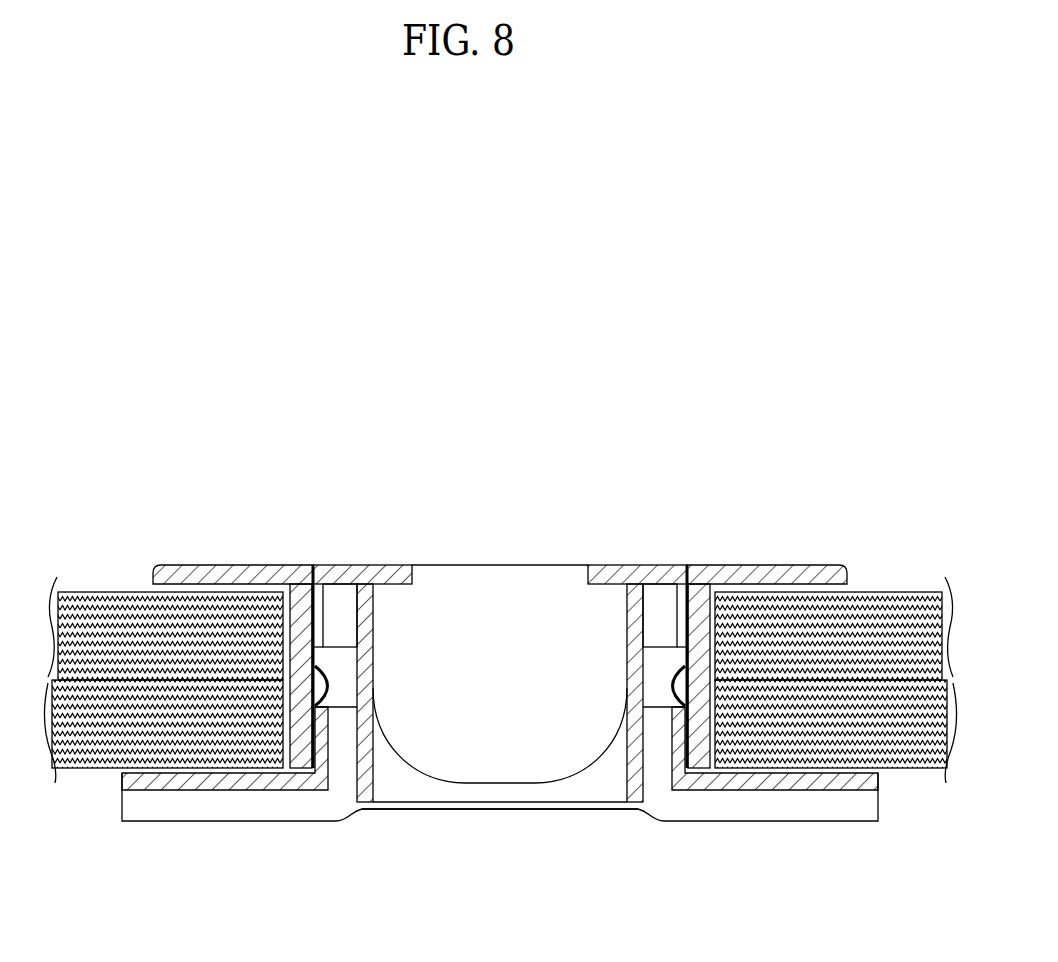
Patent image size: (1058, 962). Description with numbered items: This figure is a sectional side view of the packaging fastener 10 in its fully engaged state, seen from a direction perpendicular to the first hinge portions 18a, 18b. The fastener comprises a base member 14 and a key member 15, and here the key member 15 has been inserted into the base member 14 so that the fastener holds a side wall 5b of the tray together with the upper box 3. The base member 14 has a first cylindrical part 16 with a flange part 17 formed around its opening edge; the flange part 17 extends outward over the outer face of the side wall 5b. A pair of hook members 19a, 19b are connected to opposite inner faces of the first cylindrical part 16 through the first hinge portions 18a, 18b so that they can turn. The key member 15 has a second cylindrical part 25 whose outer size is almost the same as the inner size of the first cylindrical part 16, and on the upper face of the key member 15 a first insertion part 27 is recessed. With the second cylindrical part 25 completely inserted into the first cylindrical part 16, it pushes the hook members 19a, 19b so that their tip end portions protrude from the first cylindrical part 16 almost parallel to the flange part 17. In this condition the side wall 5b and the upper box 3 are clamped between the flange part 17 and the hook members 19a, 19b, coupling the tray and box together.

The packaging fastener 10 is at (627, 508).
The base member 14 is at (253, 553).
The flange part 17 is at (193, 563).
The first insertion part 27 is at (472, 597).
The second cylindrical part 25 is at (378, 786).
The key member 15 is at (573, 821).
The first cylindrical part 16 is at (291, 792).
The first hinge portion 18a is at (320, 670).
The first hinge portion 18b is at (680, 670).
The hook member 19a is at (208, 785).
The hook member 19b is at (792, 792).
The side wall 5b is at (92, 612).
The upper box 3 is at (90, 760).